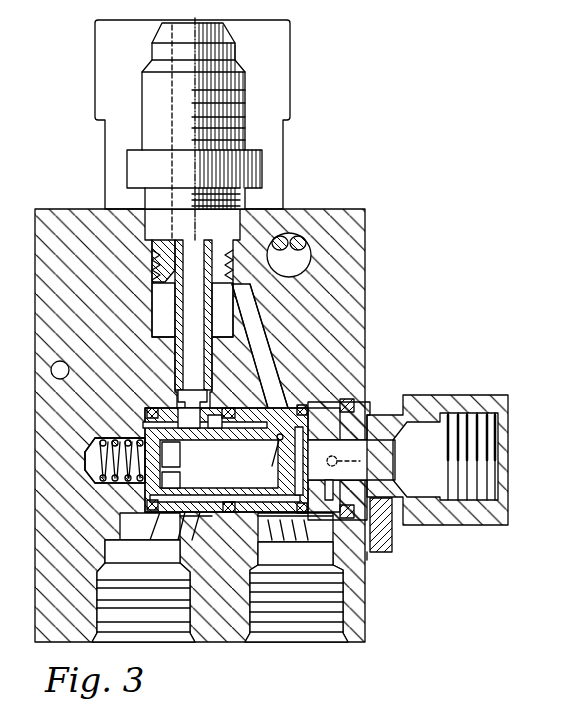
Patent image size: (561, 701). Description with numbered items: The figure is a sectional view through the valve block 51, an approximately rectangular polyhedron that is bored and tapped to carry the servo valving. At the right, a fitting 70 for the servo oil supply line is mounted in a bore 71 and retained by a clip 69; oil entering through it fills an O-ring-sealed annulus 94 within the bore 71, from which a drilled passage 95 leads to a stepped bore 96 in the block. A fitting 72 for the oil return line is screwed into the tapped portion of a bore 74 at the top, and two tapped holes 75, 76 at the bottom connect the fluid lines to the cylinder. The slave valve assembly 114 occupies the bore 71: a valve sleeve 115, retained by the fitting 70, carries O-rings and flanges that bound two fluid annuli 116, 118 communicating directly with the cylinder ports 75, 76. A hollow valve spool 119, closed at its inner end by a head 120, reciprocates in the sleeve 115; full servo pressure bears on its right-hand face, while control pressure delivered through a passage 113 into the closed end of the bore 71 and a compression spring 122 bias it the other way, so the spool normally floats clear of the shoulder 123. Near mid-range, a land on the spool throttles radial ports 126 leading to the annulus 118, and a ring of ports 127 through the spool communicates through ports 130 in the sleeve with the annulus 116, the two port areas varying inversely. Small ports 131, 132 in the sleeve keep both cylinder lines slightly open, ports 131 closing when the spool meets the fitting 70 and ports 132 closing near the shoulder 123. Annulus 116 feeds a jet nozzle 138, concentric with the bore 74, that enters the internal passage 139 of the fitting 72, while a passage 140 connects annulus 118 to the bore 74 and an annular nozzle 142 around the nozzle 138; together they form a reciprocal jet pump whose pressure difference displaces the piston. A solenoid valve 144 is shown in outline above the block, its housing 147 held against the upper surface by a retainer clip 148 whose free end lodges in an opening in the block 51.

The valve block 51 is at (66, 207).
The clip 69 is at (375, 555).
The fitting 70 is at (460, 395).
The bore 71 is at (325, 402).
The fitting 72 is at (148, 95).
The bore 74 is at (160, 325).
The tapped hole 75 is at (187, 624).
The tapped hole 76 is at (338, 628).
The annulus 94 is at (385, 530).
The drilled passage 95 is at (351, 460).
The stepped bore 96 is at (340, 486).
The passage 113 is at (88, 466).
The slave valve assembly 114 is at (215, 520).
The valve sleeve 115 is at (145, 410).
The fluid annulus 116 is at (157, 520).
The fluid annulus 118 is at (278, 525).
The valve spool 119 is at (218, 414).
The head 120 is at (165, 470).
The compression spring 122 is at (98, 455).
The shoulder 123 is at (112, 437).
The radial ports 126 is at (306, 404).
The ring of ports 127 is at (178, 457).
The ports 130 is at (170, 410).
The small ports 131 is at (261, 456).
The small ports 132 is at (190, 513).
The jet nozzle 138 is at (165, 303).
The internal passage 139 is at (160, 247).
The passage 140 is at (250, 330).
The annular nozzle 142 is at (156, 270).
The solenoid valve 144 is at (233, 114).
The solenoid valve housing 147 is at (293, 50).
The retainer clip 148 is at (290, 233).